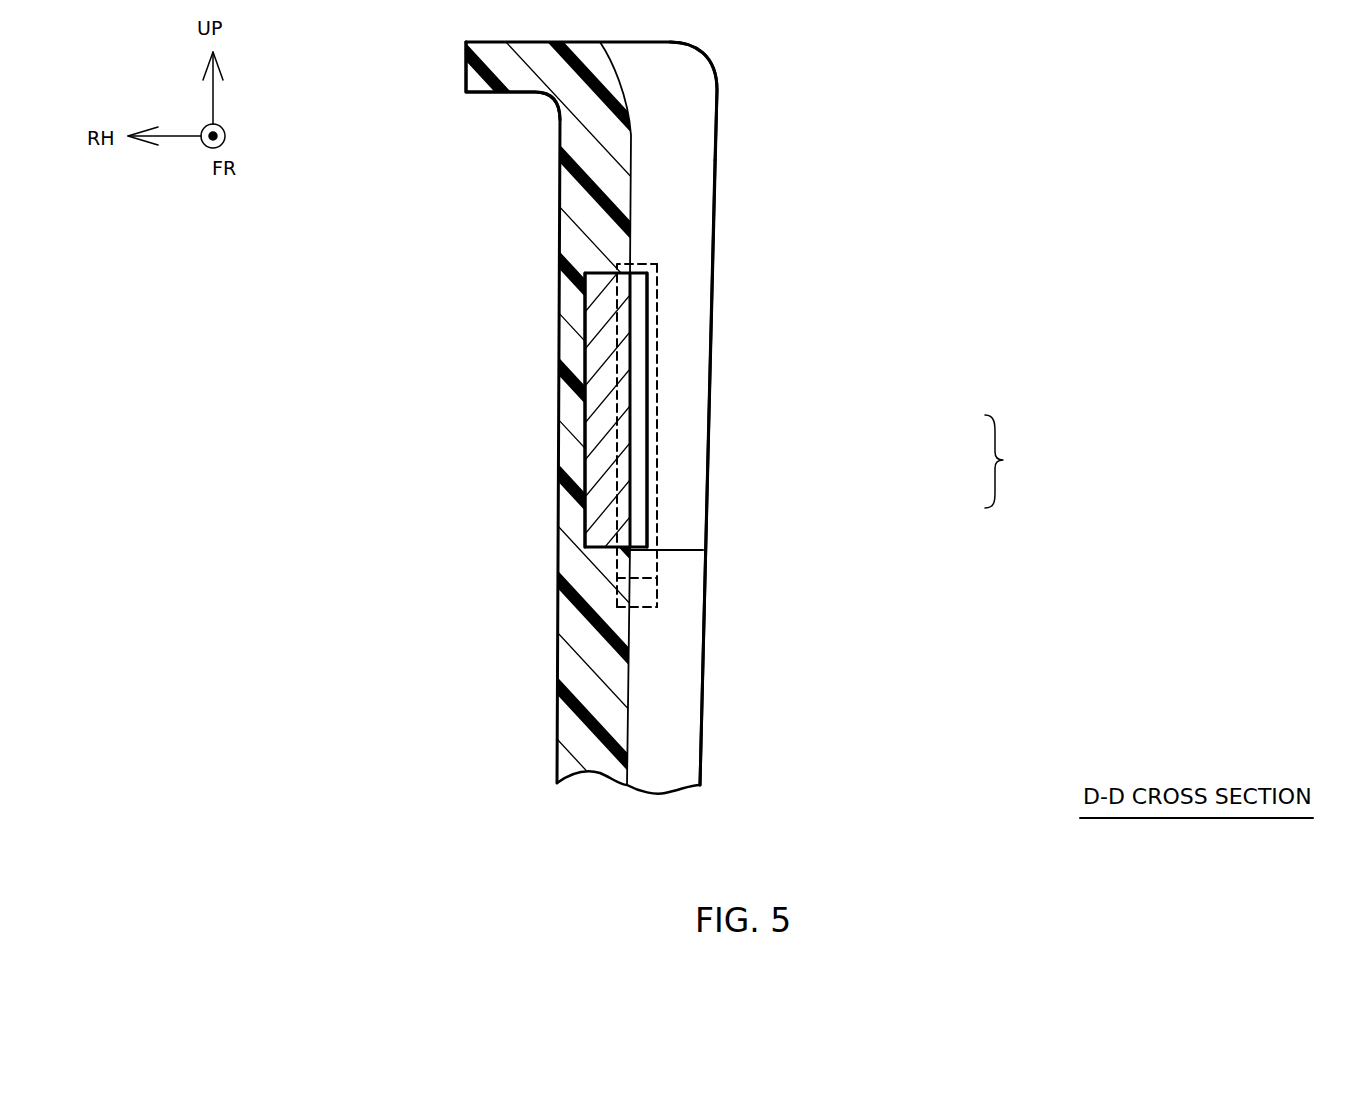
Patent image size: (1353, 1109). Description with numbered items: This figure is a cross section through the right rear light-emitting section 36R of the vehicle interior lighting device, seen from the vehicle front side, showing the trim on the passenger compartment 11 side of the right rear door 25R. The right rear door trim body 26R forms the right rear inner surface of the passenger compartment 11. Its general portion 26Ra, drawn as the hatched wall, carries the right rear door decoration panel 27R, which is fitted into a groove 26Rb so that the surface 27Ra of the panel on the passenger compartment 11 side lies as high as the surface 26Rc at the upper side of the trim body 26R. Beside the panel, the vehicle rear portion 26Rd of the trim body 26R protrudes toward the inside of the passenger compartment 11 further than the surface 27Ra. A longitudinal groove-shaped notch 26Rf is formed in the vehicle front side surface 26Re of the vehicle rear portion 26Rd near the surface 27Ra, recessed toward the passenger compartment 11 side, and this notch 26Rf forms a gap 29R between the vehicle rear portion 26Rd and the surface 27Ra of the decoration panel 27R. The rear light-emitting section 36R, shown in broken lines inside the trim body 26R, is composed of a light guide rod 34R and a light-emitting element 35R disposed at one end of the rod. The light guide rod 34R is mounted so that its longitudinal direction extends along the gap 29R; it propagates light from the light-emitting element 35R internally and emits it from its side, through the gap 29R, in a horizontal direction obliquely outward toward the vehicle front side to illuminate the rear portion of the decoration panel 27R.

The passenger compartment 11 is at (950, 614).
The right rear door 25R is at (466, 532).
The right rear door trim body 26R is at (703, 678).
The general portion 26Ra is at (557, 222).
The groove 26Rb is at (575, 408).
The surface at the upper side of the rear door trim body 26Rc is at (633, 143).
The vehicle rear portion 26Rd is at (715, 233).
The vehicle front side surface 26Re is at (683, 195).
The notch 26Rf is at (648, 350).
The right rear door decoration panel 27R is at (600, 547).
The surface of the rear door decoration panel 27Ra is at (638, 465).
The gap 29R is at (637, 310).
The light guide rod 34R is at (657, 408).
The light-emitting element 35R is at (657, 583).
The right rear light-emitting section 36R is at (1022, 461).